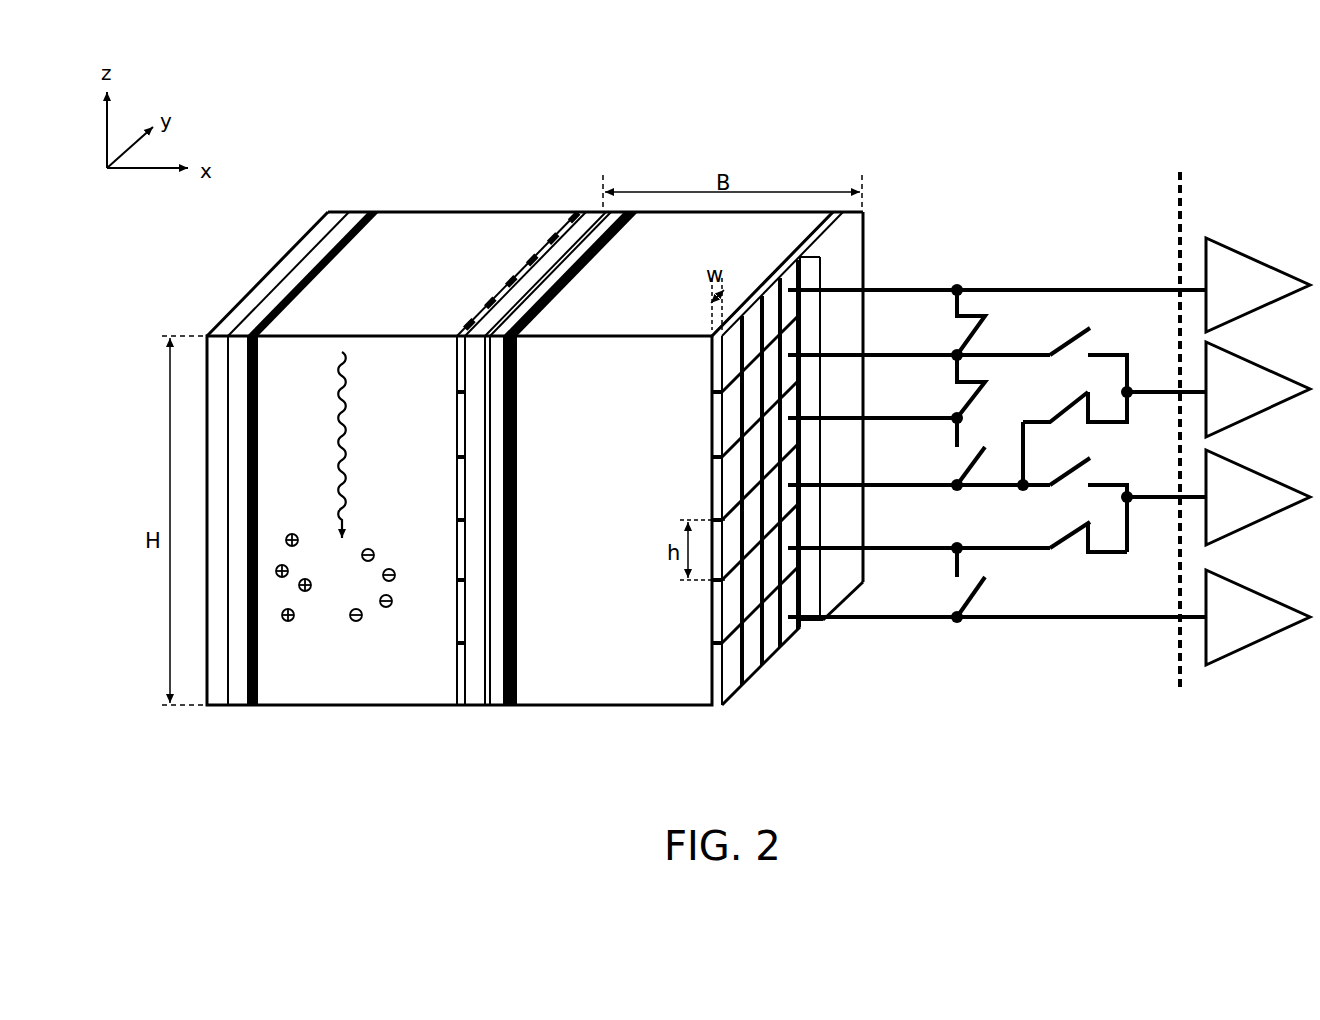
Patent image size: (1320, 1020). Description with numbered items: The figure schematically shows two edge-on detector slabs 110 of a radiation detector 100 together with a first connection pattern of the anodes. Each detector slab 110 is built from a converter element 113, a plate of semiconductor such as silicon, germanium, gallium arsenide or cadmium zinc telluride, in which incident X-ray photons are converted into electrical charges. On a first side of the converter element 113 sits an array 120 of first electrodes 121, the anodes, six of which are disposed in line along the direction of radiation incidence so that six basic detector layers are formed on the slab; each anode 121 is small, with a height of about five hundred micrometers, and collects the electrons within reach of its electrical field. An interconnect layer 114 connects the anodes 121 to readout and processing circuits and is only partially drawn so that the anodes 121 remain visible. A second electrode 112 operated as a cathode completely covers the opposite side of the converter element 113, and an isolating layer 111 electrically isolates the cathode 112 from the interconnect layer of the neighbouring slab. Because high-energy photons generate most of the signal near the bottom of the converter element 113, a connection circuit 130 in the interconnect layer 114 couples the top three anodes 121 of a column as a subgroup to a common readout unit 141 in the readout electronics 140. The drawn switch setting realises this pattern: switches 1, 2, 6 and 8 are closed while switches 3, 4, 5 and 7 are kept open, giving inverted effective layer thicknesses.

The radiation detector 100 is at (298, 160).
The detector slab 110 is at (603, 207).
The isolating layer 111 is at (235, 705).
The second electrode 112 is at (252, 705).
The converter element 113 is at (343, 700).
The interconnect layer 114 is at (475, 697).
The array of first electrodes 120 is at (456, 710).
The first electrode 121 is at (773, 645).
The connection circuit 130 is at (1180, 695).
The readout electronics 140 is at (1318, 695).
The readout unit 141 is at (1248, 265).
The switch 1 is at (959, 322).
The switch 2 is at (958, 386).
The switch 3 is at (958, 451).
The switch 4 is at (958, 582).
The switch 5 is at (1088, 359).
The switch 6 is at (1075, 407).
The switch 7 is at (1088, 504).
The switch 8 is at (1088, 537).